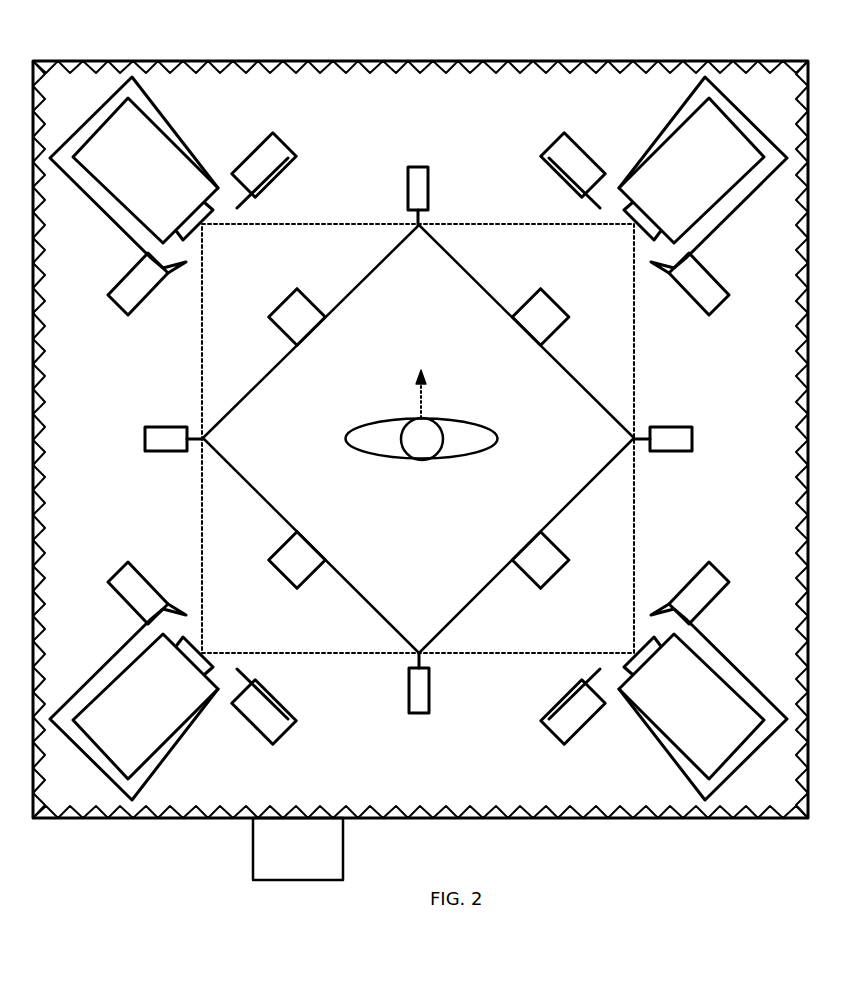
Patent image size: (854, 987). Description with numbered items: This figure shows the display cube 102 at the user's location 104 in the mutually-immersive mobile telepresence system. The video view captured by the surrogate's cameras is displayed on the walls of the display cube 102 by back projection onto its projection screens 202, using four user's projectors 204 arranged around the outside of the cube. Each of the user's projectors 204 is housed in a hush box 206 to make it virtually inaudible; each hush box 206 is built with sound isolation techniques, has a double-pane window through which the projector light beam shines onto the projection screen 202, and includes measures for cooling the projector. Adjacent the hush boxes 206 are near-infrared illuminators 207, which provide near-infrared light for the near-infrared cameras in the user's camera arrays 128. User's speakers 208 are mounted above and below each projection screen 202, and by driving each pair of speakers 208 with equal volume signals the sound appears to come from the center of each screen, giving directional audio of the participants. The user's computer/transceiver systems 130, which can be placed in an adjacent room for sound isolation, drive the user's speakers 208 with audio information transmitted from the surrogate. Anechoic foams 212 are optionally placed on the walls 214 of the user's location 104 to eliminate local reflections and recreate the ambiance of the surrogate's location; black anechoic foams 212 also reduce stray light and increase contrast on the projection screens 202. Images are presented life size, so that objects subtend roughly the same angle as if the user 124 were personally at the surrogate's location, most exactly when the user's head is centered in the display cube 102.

The display cube 102 is at (451, 304).
The user's location 104 is at (477, 104).
The user 124 is at (383, 456).
The user's camera arrays 128 is at (414, 165).
The user's computer/transceiver systems 130 is at (315, 862).
The projection screen 202 is at (337, 306).
The user's projector 204 is at (131, 190).
The hush box 206 is at (63, 142).
The near-infrared illuminator 207 is at (247, 148).
The user's speaker 208 is at (512, 305).
The anechoic foam 212 is at (547, 72).
The wall 214 is at (657, 60).